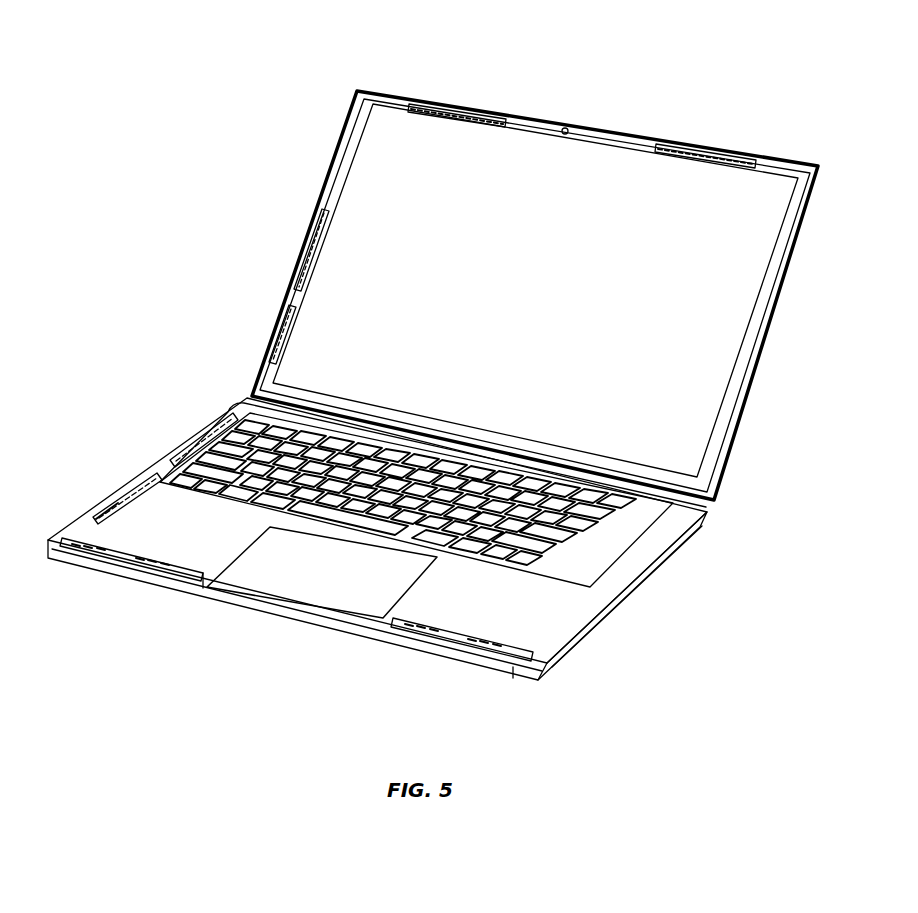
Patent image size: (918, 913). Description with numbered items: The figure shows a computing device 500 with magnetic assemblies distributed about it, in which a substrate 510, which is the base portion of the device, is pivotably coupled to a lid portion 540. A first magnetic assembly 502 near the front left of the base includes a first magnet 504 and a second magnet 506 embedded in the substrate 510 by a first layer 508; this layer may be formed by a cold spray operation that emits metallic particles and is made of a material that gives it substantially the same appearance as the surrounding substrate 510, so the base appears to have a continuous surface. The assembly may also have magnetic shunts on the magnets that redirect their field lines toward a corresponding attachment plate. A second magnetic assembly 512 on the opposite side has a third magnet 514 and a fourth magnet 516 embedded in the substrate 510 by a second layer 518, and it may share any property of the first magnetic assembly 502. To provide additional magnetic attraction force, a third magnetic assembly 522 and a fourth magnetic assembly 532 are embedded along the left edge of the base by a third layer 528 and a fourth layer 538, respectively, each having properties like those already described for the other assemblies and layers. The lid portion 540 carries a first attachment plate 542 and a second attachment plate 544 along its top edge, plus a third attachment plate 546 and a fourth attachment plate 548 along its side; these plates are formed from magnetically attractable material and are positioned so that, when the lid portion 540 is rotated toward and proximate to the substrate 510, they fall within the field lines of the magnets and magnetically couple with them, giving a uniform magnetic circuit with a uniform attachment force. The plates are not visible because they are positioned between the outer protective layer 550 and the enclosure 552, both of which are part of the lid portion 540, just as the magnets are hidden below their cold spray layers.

The computing device 500 is at (145, 163).
The first magnetic assembly 502 is at (82, 535).
The first magnet 504 is at (80, 553).
The second magnet 506 is at (158, 567).
The first layer 508 is at (202, 587).
The substrate 510 is at (405, 515).
The second magnetic assembly 512 is at (535, 641).
The third magnet 514 is at (418, 636).
The fourth magnet 516 is at (472, 648).
The second layer 518 is at (522, 670).
The third magnetic assembly 522 is at (143, 476).
The third layer 528 is at (95, 512).
The fourth magnetic assembly 532 is at (226, 407).
The fourth layer 538 is at (168, 455).
The lid portion 540 is at (312, 114).
The first attachment plate 542 is at (410, 103).
The second attachment plate 544 is at (658, 142).
The third attachment plate 546 is at (307, 238).
The fourth attachment plate 548 is at (270, 334).
The outer protective layer 550 is at (357, 88).
The enclosure 552 is at (812, 166).